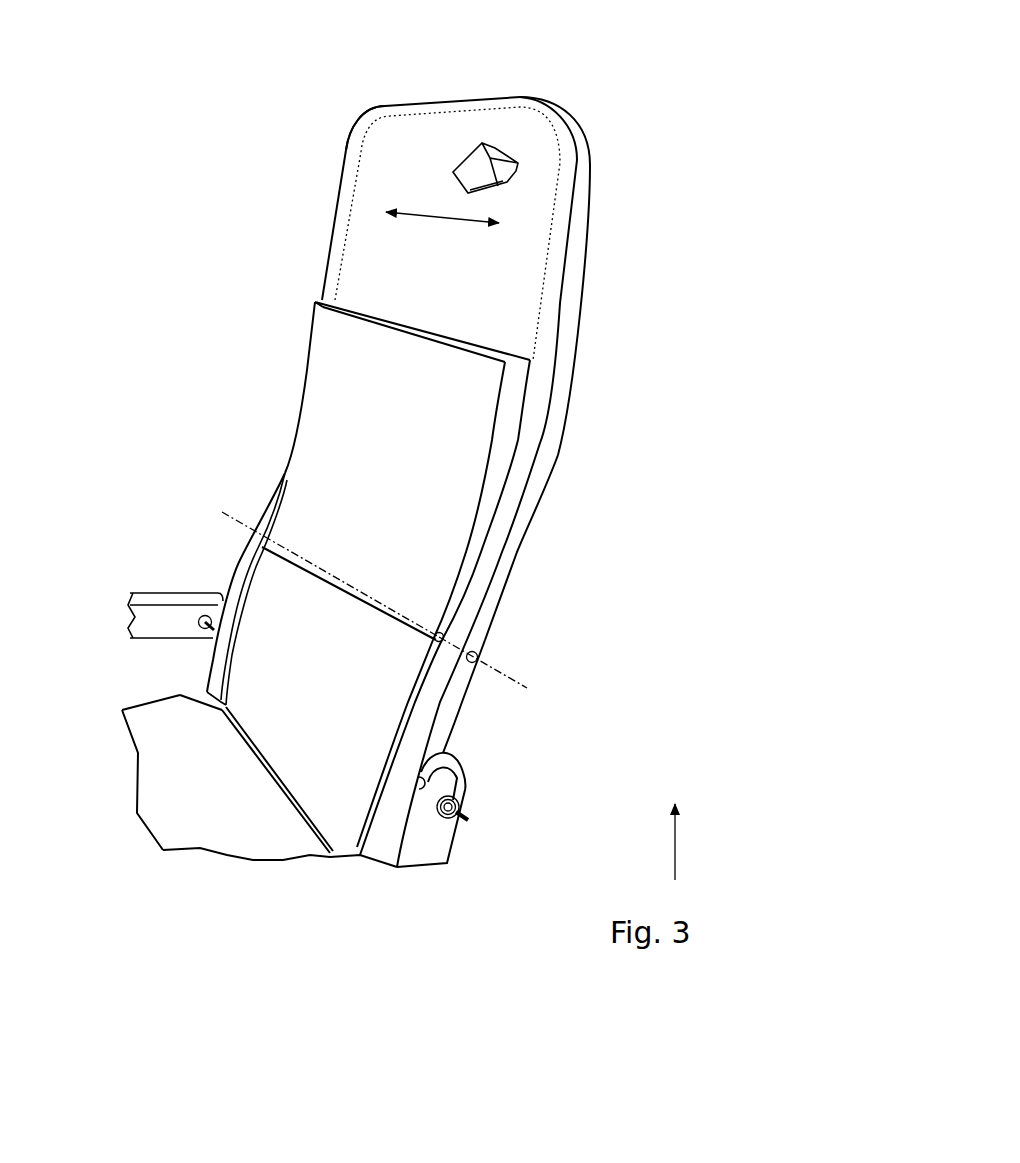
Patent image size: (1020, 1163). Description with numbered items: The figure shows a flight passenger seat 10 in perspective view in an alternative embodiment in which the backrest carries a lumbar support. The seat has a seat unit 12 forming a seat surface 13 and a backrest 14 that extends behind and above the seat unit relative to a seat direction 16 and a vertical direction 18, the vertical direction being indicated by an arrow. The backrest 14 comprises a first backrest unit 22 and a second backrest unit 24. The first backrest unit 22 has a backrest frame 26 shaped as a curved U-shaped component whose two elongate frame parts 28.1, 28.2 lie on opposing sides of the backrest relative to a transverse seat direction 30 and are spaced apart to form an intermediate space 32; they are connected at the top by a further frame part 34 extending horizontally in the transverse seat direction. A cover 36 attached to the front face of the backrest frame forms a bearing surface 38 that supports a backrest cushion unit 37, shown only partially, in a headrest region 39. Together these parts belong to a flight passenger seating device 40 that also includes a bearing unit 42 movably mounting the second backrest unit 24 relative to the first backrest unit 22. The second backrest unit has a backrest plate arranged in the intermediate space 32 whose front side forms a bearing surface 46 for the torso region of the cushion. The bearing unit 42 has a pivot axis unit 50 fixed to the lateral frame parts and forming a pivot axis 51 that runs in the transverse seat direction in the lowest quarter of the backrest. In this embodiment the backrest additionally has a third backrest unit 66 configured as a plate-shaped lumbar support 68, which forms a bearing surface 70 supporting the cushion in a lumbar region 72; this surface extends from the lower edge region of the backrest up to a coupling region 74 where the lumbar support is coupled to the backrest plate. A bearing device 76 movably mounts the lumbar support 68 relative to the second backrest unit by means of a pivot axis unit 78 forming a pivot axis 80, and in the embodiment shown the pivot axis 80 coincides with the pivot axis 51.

The flight passenger seat 10 is at (308, 133).
The seat unit 12 is at (219, 828).
The seat surface 13 is at (265, 830).
The backrest 14 is at (595, 121).
The seat direction 16 is at (169, 783).
The vertical direction 18 is at (675, 857).
The first backrest unit 22 is at (575, 275).
The second backrest unit 24 is at (509, 428).
The backrest frame 26 is at (531, 503).
The frame part 28.1 is at (508, 563).
The frame part 28.2 is at (263, 512).
The transverse seat direction 30 is at (440, 217).
The intermediate space 32 is at (278, 577).
The further frame part 34 is at (457, 97).
The cover 36 is at (377, 172).
The backrest cushion unit 37 is at (494, 156).
The bearing surface 38 is at (358, 250).
The headrest region 39 is at (413, 160).
The flight passenger seating device 40 is at (600, 201).
The bearing unit 42 is at (486, 683).
The bearing surface 46 is at (342, 417).
The pivot axis unit 50 is at (487, 678).
The pivot axis 51 is at (235, 520).
The third backrest unit 66 is at (361, 753).
The lumbar support 68 is at (318, 762).
The bearing surface 70 is at (303, 699).
The lumbar region 72 is at (266, 722).
The coupling region 74 is at (406, 588).
The bearing device 76 is at (454, 633).
The pivot axis unit 78 is at (478, 658).
The pivot axis 80 is at (521, 681).